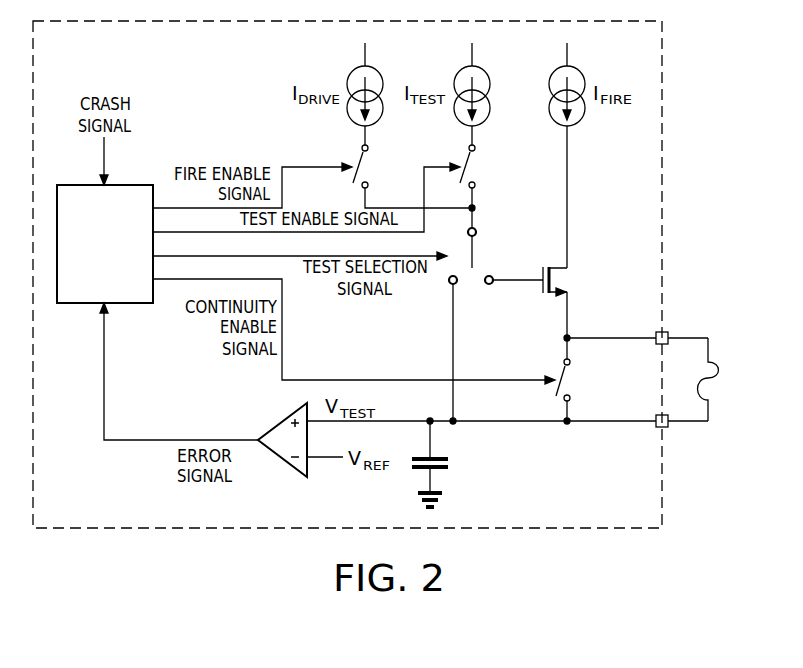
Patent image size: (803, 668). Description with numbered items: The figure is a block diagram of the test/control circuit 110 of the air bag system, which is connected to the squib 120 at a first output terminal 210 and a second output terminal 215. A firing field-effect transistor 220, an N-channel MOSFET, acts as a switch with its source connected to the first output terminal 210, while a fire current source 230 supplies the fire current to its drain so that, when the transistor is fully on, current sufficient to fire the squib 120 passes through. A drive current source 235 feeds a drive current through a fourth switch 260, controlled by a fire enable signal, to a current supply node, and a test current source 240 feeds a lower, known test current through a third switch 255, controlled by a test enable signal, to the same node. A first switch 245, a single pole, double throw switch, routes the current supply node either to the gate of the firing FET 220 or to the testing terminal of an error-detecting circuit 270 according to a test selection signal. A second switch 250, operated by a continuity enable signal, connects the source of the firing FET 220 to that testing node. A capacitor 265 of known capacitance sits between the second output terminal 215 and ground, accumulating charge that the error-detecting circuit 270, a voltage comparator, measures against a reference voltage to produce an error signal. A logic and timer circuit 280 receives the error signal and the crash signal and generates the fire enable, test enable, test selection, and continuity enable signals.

The test/control circuit 110 is at (663, 167).
The squib 120 is at (719, 372).
The first output terminal 210 is at (655, 346).
The second output terminal 215 is at (655, 413).
The firing field-effect transistor 220 is at (545, 297).
The fire current source 230 is at (554, 68).
The drive current source 235 is at (353, 68).
The test current source 240 is at (460, 68).
The first switch 245 is at (480, 258).
The second switch 250 is at (573, 380).
The third switch 255 is at (479, 167).
The fourth switch 260 is at (372, 167).
The capacitor 265 is at (450, 467).
The error-detecting circuit 270 is at (278, 421).
The logic and timer circuit 280 is at (136, 185).